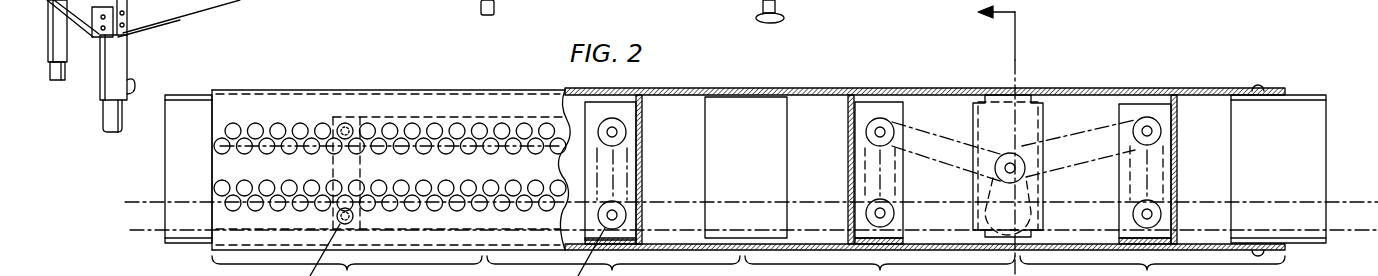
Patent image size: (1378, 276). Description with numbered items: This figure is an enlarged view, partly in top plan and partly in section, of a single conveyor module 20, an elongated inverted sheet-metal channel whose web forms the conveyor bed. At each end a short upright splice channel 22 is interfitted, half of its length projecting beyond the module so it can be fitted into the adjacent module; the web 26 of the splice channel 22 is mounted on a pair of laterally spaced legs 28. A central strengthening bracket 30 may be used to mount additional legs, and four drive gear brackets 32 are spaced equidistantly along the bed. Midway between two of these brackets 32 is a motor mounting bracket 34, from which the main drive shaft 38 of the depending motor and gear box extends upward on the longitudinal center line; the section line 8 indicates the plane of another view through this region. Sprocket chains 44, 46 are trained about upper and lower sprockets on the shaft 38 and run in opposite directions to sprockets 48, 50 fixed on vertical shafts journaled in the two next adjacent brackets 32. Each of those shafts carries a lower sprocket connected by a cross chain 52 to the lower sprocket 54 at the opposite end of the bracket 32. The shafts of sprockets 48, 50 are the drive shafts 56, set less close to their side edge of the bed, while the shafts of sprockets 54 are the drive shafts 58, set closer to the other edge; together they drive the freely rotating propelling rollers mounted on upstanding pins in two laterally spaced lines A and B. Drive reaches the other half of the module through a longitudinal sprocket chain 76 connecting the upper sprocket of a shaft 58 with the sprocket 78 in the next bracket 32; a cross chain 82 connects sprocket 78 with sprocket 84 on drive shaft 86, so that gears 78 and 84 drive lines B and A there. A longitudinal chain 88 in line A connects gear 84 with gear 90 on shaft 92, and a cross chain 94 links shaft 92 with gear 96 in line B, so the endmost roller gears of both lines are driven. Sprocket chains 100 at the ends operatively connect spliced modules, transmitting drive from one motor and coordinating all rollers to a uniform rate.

The section line 8- 8 is at (979, 139).
The module 20 is at (482, 90).
The splice channel section 22 is at (181, 100).
The web of the splice channel 26 is at (93, 13).
The legs 28 is at (52, 47).
The central strengthening bracket 30 is at (760, 112).
The drive gear bracket 32 is at (642, 112).
The motor mounting bracket 34 is at (998, 105).
The main drive shaft 38 is at (1010, 163).
The sprocket chain 44 is at (933, 130).
The sprocket chain 46 is at (1088, 132).
The sprocket 48 is at (1040, 143).
The sprocket 50 is at (1150, 120).
The cross chain 52 is at (862, 170).
The sprocket 54 is at (868, 214).
The drive shaft 56 is at (868, 133).
The drive shaft 58 is at (892, 214).
The longitudinal sprocket chain 76 is at (723, 198).
The sprocket 78 is at (600, 216).
The cross chain 82 is at (630, 176).
The sprocket 84 is at (606, 165).
The drive shaft 86 is at (626, 138).
The longitudinal chain 88 is at (428, 117).
The gear 90 is at (336, 122).
The shaft 92 is at (345, 122).
The cross chain 94 is at (362, 166).
The gear 96 is at (360, 222).
The sprocket chains 100 is at (130, 203).
The line of rollers A is at (195, 143).
The line of rollers B is at (195, 187).